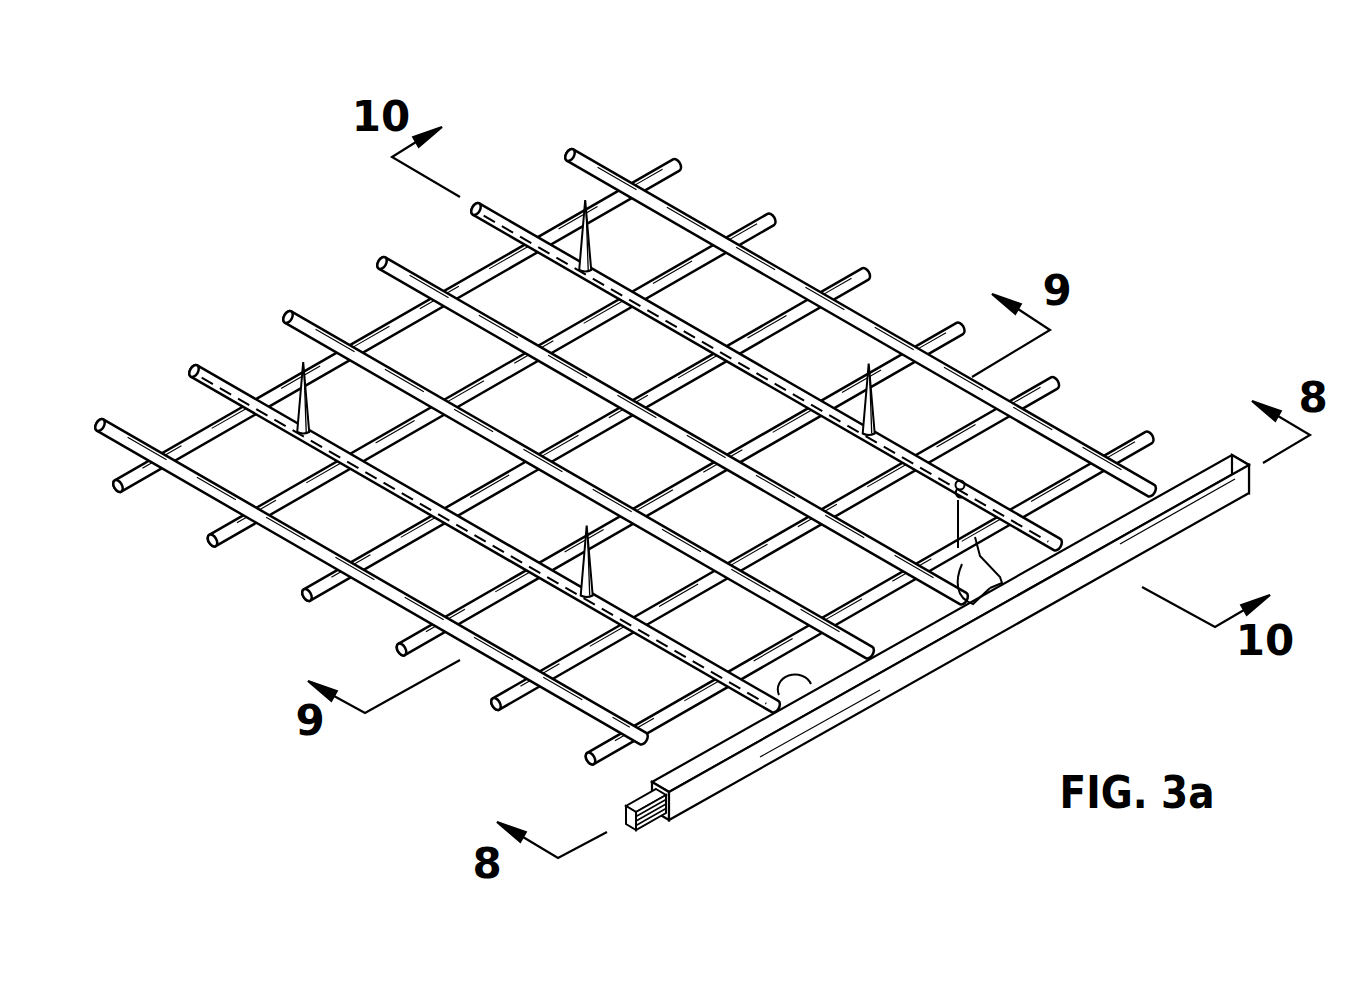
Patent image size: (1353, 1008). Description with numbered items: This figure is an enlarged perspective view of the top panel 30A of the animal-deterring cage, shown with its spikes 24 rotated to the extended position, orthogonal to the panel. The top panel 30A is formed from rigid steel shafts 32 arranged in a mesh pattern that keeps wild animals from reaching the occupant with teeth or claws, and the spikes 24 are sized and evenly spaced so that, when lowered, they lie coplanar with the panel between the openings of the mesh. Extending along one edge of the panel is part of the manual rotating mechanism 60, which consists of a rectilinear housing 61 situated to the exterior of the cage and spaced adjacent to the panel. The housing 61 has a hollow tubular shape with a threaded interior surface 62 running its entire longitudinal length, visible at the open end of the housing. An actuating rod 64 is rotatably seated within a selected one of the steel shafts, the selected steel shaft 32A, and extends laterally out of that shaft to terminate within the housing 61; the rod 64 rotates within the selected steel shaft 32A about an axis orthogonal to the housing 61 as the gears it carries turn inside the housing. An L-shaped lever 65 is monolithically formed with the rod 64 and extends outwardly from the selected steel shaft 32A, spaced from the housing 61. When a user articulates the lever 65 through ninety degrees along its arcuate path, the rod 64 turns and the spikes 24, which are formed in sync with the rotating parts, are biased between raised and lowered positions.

The top panel 30A is at (1079, 119).
The steel shafts 32 is at (411, 374).
The selected steel shaft 32A is at (621, 272).
The spikes 24 is at (583, 232).
The mechanism 60 is at (1215, 458).
The housings 61 is at (1040, 595).
The threaded interior surface 62 is at (655, 815).
The actuating rod 64 is at (808, 690).
The L-shaped lever 65 is at (968, 605).